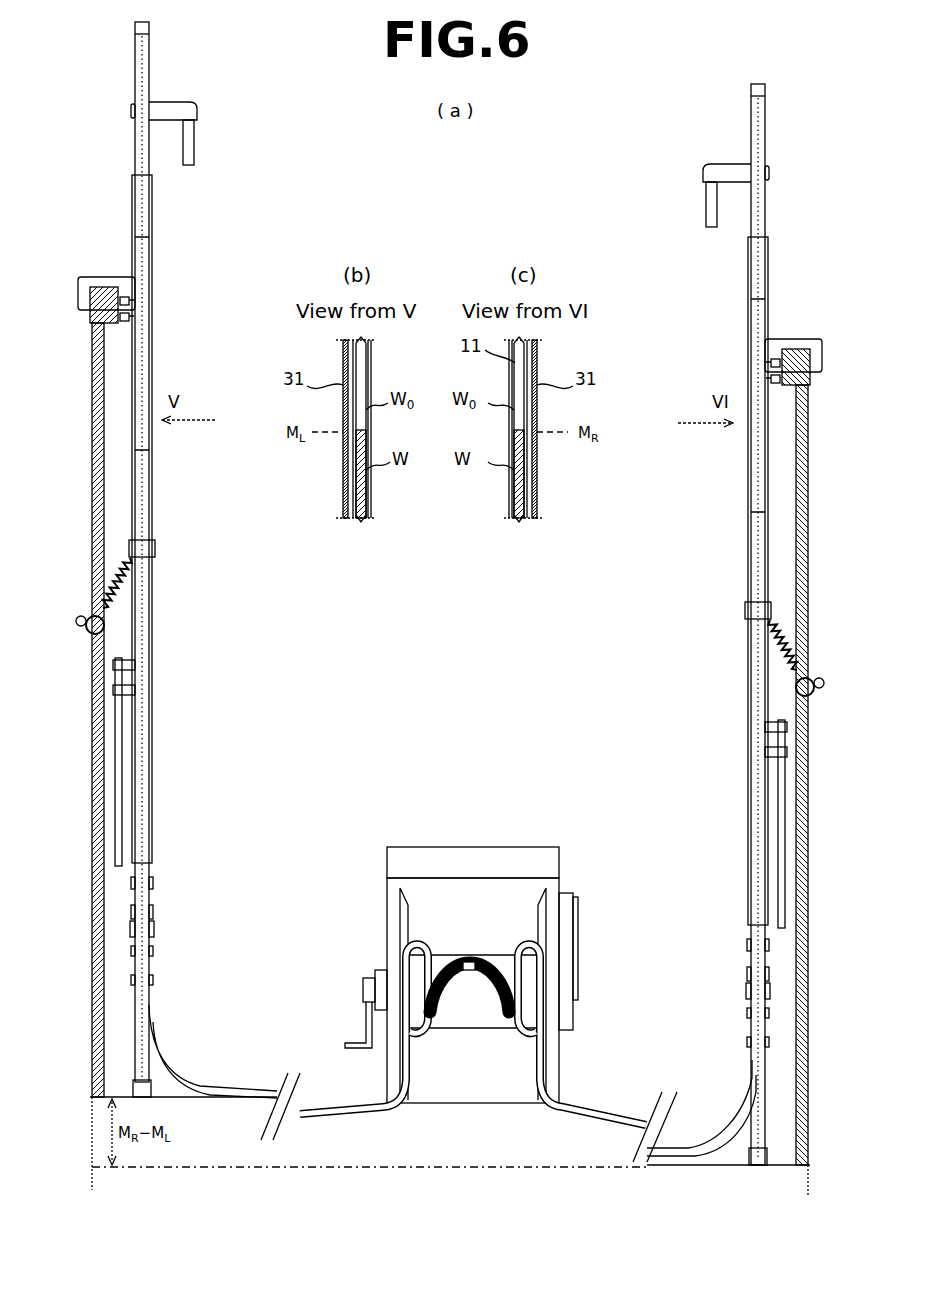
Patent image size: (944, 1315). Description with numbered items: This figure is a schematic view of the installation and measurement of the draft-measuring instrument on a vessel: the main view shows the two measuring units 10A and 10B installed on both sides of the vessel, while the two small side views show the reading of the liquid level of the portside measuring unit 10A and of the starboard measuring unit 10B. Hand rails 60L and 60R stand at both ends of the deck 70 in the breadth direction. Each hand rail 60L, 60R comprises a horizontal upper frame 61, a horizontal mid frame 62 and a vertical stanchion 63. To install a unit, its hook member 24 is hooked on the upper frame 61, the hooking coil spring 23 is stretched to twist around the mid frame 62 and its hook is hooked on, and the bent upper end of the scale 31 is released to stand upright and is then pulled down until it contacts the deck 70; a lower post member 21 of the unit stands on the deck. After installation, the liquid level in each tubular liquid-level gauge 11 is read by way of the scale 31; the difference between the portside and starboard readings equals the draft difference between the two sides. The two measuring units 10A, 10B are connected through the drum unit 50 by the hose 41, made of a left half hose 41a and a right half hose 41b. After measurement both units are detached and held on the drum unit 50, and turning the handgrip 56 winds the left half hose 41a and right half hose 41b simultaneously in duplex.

The measuring unit 10A is at (145, 559).
The measuring unit 10B is at (746, 312).
The tubular liquid-level gauge 11 is at (365, 363).
The lower post member 21 is at (152, 690).
The hooking coil spring 23 is at (98, 606).
The hook member 24 is at (108, 285).
The scale 31 is at (152, 372).
The hose 41 is at (473, 1034).
The left half hose 41a is at (320, 1108).
The right half hose 41b is at (610, 1120).
The drum unit 50 is at (470, 845).
The handgrip 56 is at (350, 1040).
The hand rail 60L is at (91, 659).
The hand rail 60R is at (812, 862).
The upper frame 61 is at (86, 325).
The mid frame 62 is at (88, 638).
The stanchion 63 is at (90, 430).
The deck 70 is at (165, 1095).